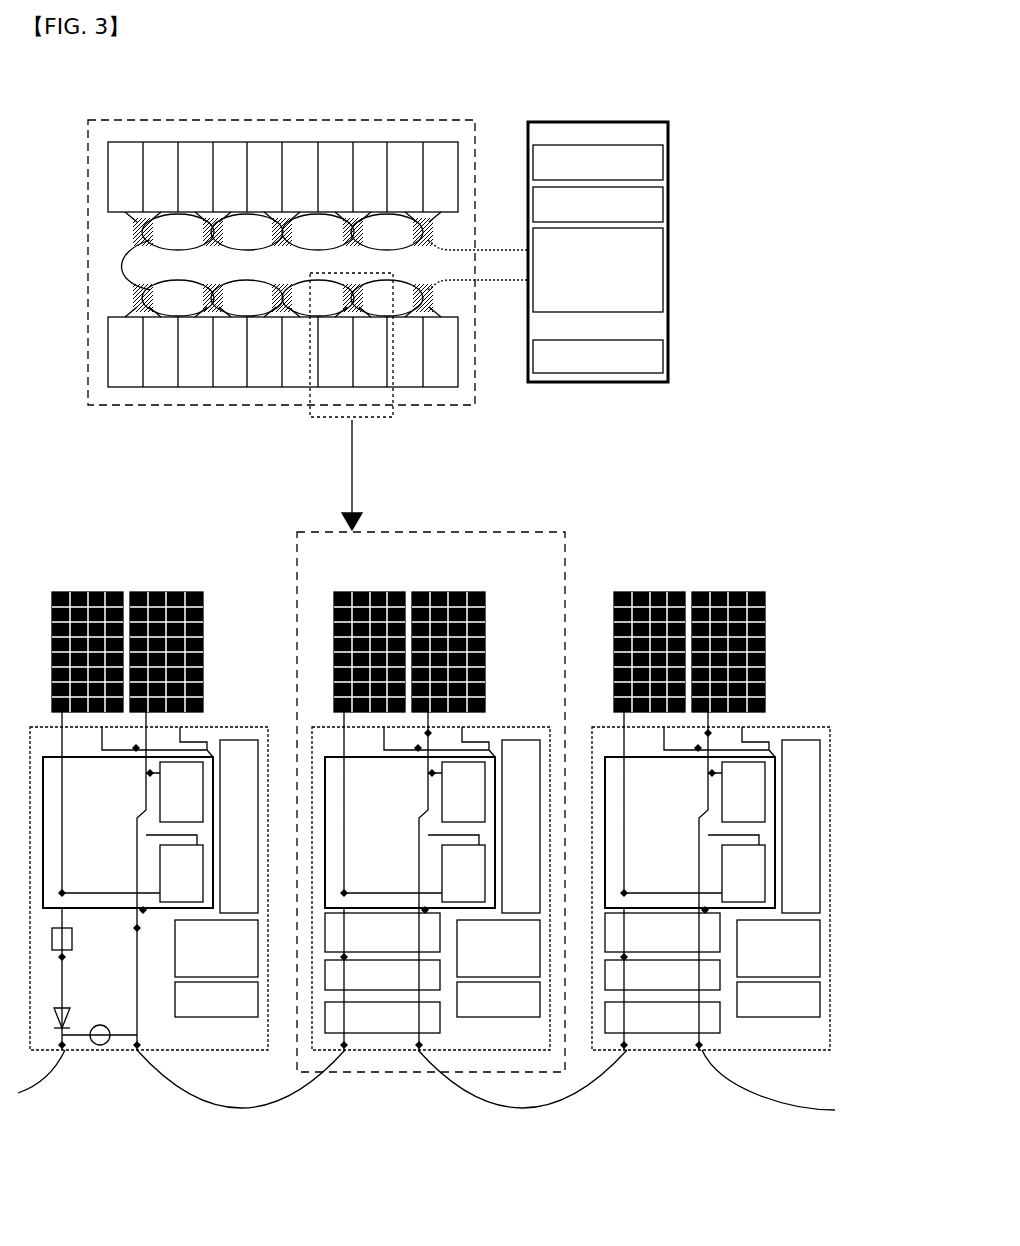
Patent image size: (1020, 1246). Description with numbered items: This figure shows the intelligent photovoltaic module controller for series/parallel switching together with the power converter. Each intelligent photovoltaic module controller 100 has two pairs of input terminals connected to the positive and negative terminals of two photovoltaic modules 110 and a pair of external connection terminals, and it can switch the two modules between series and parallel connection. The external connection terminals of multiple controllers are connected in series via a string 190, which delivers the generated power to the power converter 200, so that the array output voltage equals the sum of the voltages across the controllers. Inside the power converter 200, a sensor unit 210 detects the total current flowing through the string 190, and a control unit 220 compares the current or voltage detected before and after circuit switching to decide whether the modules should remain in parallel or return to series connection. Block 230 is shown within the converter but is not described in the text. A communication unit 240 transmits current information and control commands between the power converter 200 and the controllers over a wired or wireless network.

The intelligent photovoltaic module controller 100 is at (247, 728).
The photovoltaic module 110 is at (203, 595).
The string 190 is at (476, 404).
The power converter 200 is at (662, 252).
The sensor unit 210 is at (598, 162).
The control unit 220 is at (598, 204).
The processor 230 is at (598, 270).
The communication unit 240 is at (598, 356).